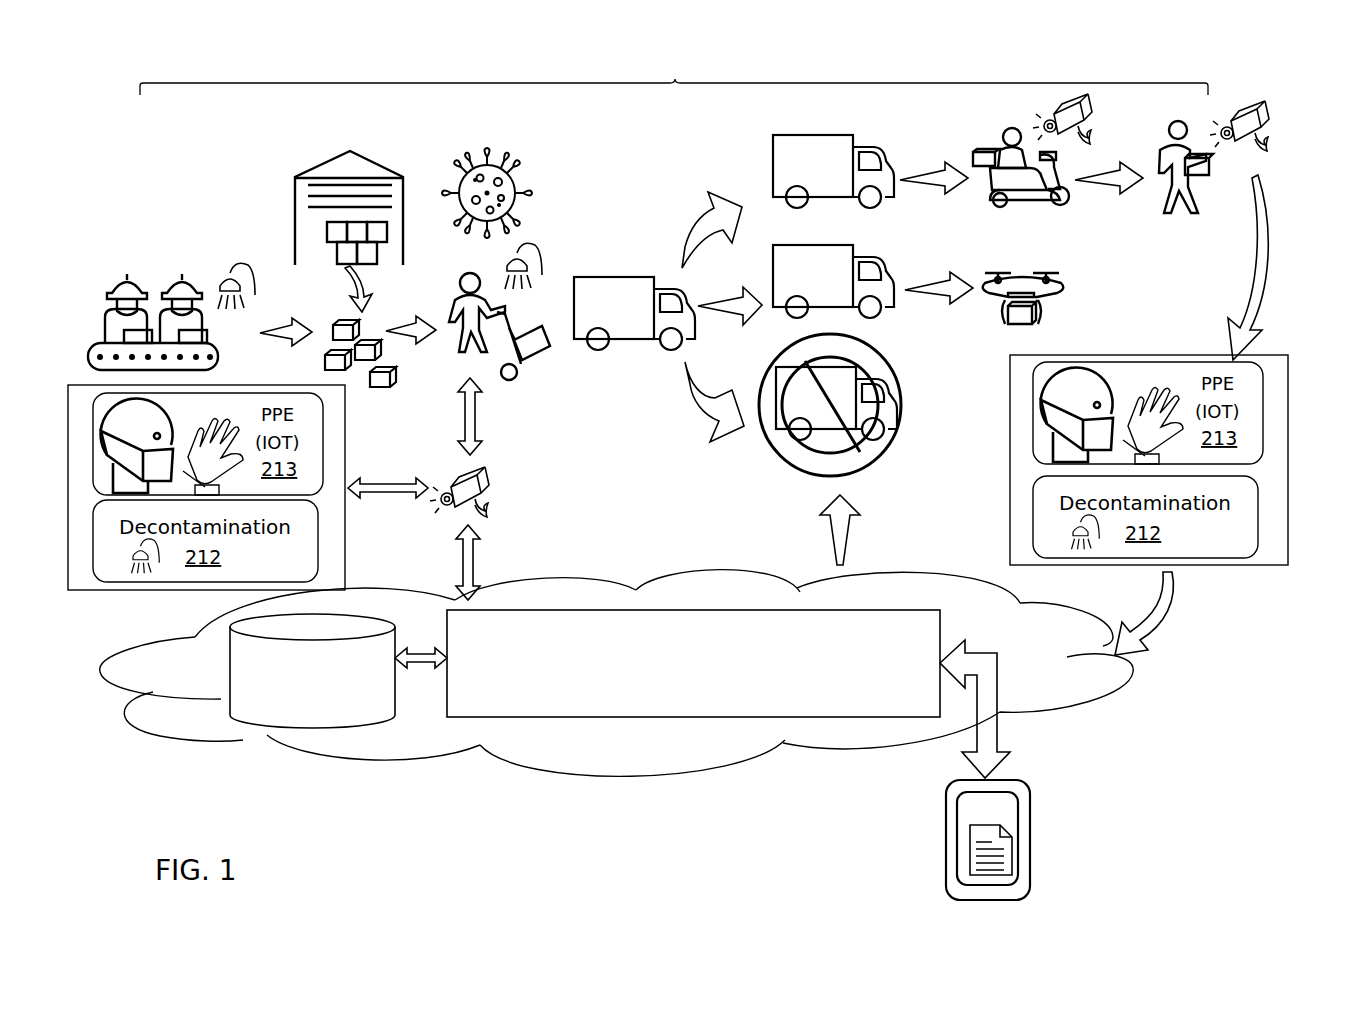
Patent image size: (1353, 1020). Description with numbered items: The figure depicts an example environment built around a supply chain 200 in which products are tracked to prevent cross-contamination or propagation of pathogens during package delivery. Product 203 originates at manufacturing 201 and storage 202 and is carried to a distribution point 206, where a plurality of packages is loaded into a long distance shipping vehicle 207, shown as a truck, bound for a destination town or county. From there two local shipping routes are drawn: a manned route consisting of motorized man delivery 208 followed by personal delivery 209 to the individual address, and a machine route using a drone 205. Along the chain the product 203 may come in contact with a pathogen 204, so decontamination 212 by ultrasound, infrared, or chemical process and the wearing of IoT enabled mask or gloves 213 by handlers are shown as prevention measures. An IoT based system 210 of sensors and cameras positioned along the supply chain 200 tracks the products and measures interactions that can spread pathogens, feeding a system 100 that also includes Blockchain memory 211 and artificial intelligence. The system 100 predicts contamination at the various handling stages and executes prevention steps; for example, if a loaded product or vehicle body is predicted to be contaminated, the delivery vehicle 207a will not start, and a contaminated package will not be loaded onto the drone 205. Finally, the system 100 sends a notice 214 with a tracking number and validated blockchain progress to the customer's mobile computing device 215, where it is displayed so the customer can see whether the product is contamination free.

The supply chain 200 is at (674, 69).
The manufacturing 201 is at (120, 290).
The storage 202 is at (297, 200).
The product 203 is at (330, 310).
The pathogen 204 is at (475, 162).
The drone 205 is at (1050, 298).
The distribution point 206 is at (535, 358).
The long distance shipping vehicle 207 is at (905, 131).
The delivery vehicle 207a is at (793, 478).
The motorized man delivery 208 is at (975, 152).
The personal delivery 209 is at (1150, 150).
The IoT based system 210 is at (495, 490).
The Blockchain memory 211 is at (338, 671).
The decontamination 212 is at (221, 278).
The IoT enabled mask or gloves 213 is at (678, 505).
The notice 214 is at (1018, 855).
The mobile computing device 215 is at (1030, 805).
The system 100 is at (693, 663).